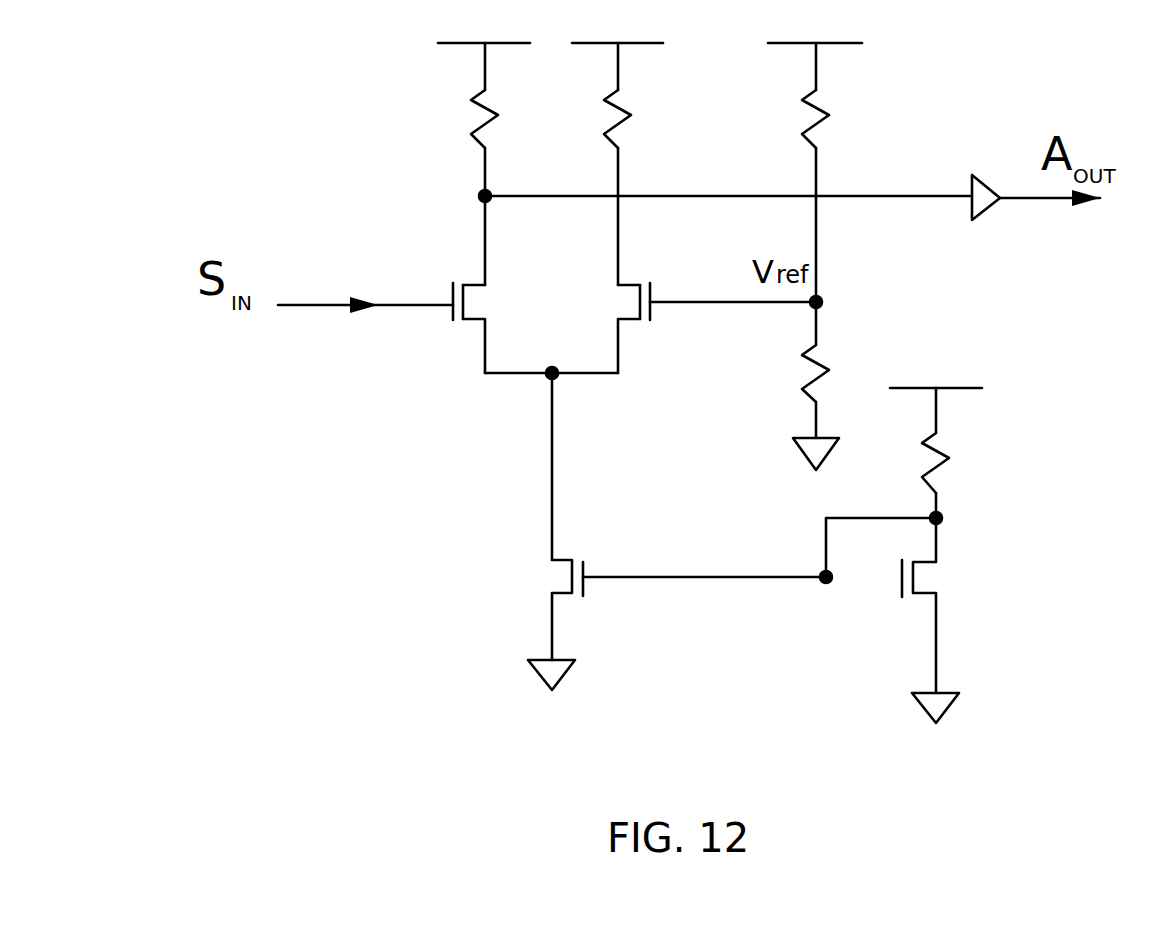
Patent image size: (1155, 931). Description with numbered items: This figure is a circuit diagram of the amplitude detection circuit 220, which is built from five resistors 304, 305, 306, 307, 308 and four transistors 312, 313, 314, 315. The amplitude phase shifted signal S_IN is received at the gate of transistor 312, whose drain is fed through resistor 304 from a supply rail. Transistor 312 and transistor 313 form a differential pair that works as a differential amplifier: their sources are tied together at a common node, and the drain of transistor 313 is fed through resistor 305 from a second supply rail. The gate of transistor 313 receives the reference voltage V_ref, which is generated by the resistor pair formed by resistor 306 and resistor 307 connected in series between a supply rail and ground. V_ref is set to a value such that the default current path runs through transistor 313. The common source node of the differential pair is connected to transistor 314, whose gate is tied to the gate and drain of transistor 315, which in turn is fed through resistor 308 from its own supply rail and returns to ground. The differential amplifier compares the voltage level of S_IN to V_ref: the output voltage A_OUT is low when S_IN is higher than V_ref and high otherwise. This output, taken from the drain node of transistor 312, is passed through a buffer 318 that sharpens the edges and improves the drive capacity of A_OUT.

The amplitude detection circuit 220 is at (430, 696).
The resistor 304 is at (471, 100).
The resistor 305 is at (627, 115).
The resistor 306 is at (826, 115).
The resistor 307 is at (826, 370).
The resistor 308 is at (946, 456).
The transistor 312 is at (487, 318).
The transistor 313 is at (642, 283).
The transistor 314 is at (575, 560).
The transistor 315 is at (905, 598).
The buffer 318 is at (973, 219).